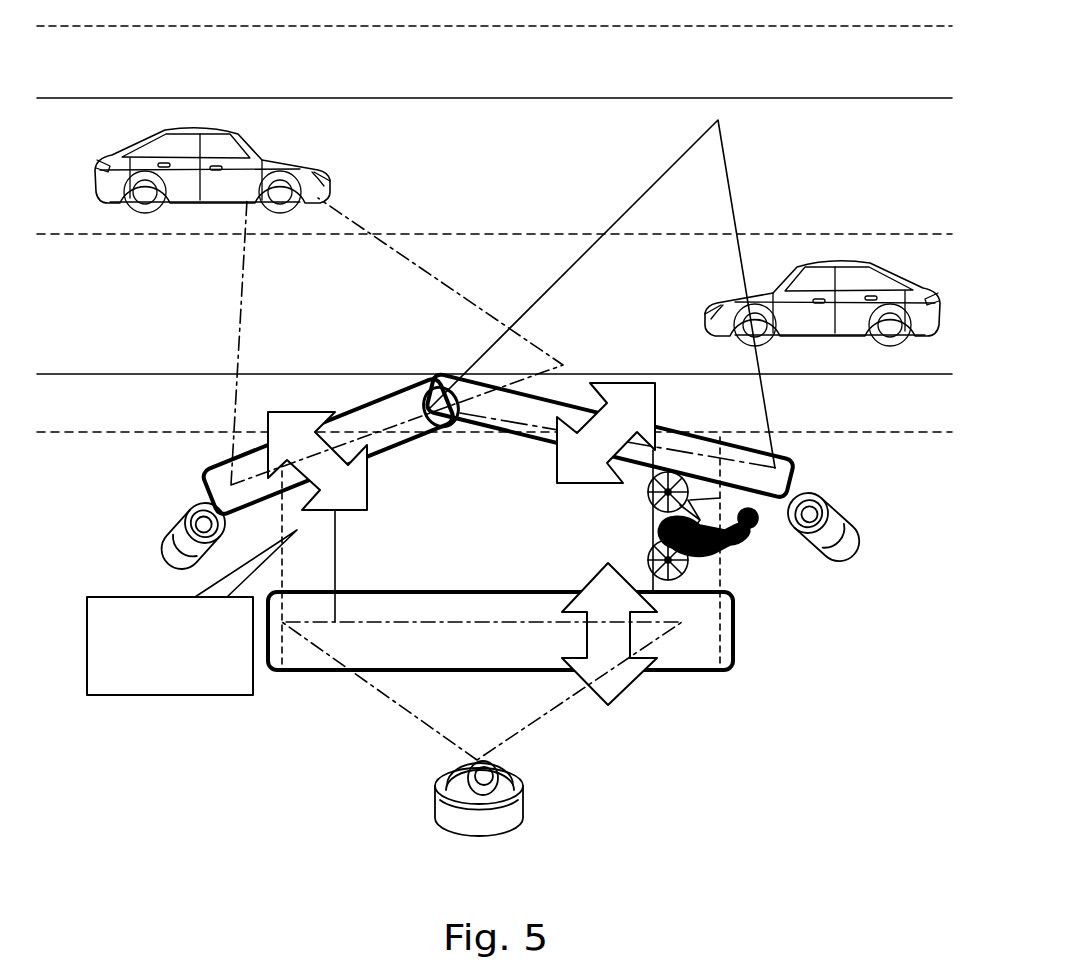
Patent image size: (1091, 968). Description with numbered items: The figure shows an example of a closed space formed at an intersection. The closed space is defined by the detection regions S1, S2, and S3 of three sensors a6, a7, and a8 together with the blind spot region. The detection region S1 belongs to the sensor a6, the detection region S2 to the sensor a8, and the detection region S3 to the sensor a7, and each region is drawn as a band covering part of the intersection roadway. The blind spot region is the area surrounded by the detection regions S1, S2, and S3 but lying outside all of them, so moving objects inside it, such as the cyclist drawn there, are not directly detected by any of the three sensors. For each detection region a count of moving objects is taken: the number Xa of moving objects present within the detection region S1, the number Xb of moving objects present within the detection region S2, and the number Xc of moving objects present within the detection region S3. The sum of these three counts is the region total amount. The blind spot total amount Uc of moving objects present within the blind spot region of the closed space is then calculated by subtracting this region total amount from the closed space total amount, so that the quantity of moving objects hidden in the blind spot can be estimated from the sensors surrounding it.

The sensor a6 is at (166, 521).
The sensor a7 is at (514, 807).
The sensor a8 is at (848, 503).
The detection region S1 is at (238, 342).
The detection region S2 is at (583, 250).
The detection region S3 is at (413, 705).
The number of moving objects present within detection region S1 Xa is at (332, 420).
The number of moving objects present within detection region S2 Xb is at (610, 407).
The number of moving objects present within detection region S3 Xc is at (500, 649).
The blind spot total amount Uc is at (192, 612).